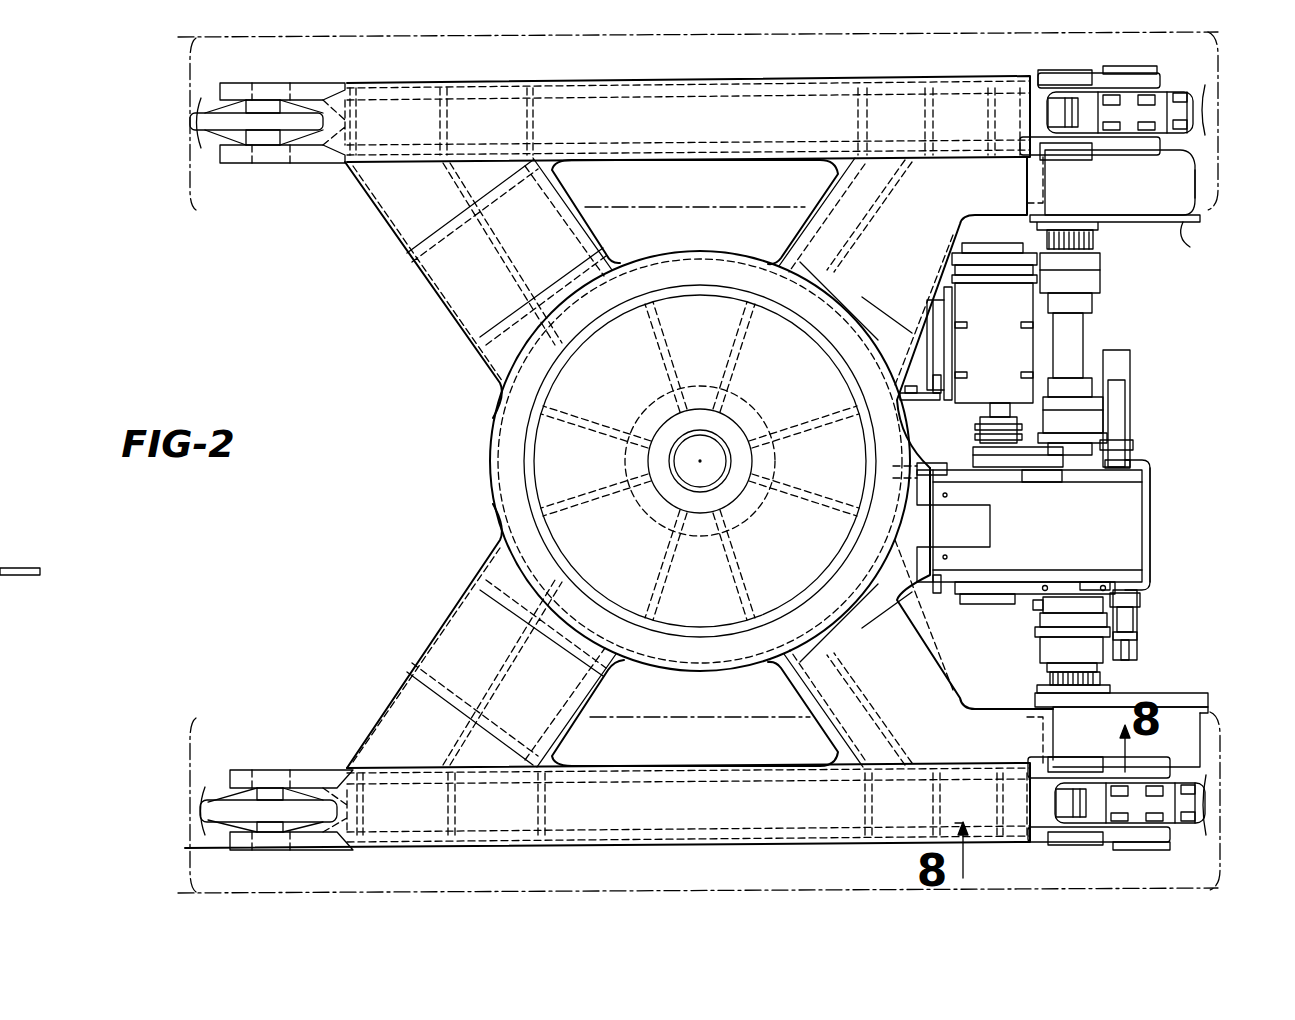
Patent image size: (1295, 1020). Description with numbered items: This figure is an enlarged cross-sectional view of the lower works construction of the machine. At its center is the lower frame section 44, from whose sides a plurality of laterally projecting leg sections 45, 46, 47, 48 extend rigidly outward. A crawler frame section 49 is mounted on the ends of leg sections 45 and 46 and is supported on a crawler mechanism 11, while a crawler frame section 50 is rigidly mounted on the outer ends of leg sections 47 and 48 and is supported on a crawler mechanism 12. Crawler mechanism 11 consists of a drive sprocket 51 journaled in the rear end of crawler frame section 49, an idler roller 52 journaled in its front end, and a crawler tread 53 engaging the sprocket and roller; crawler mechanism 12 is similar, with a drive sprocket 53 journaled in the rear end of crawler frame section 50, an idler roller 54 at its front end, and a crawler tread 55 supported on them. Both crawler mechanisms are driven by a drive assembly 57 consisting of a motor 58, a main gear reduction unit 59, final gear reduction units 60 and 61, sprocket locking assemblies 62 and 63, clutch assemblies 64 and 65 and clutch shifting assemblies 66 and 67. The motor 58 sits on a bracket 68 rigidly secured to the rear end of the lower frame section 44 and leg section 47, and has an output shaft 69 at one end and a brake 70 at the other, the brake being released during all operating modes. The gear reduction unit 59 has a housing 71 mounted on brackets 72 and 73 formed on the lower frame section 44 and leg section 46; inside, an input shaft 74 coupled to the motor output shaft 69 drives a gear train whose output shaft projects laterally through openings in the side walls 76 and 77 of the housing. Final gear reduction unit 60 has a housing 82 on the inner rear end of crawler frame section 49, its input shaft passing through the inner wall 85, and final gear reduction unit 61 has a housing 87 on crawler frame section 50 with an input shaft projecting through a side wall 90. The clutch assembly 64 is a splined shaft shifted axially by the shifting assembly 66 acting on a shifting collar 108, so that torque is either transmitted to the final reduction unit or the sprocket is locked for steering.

The crawler mechanism 11 is at (189, 820).
The crawler mechanism 12 is at (187, 131).
The lower frame section 44 is at (491, 444).
The leg section 45 is at (447, 638).
The leg section 46 is at (812, 701).
The leg section 47 is at (806, 228).
The leg section 48 is at (447, 313).
The crawler frame section 49 is at (629, 814).
The crawler frame section 50 is at (667, 132).
The drive sprocket 51 is at (1195, 805).
The idler roller 52 is at (280, 815).
The drive sprocket / crawler tread 53 is at (1190, 112).
The idler roller 54 is at (268, 117).
The crawler tread 55 is at (733, 34).
The drive assembly 57 is at (1168, 567).
The motor 58 is at (977, 358).
The main gear reduction unit 59 is at (1039, 534).
The final gear reduction unit 60 is at (1069, 732).
The final gear reduction unit 61 is at (1111, 194).
The sprocket locking assembly 62 is at (1060, 803).
The sprocket locking assembly 63 is at (1050, 117).
The clutch assembly 64 is at (1046, 648).
The clutch assembly 65 is at (1088, 330).
The clutch shifting assembly 66 is at (1140, 631).
The clutch shifting assembly 67 is at (1134, 430).
The bracket 68 is at (925, 325).
The output shaft 69 is at (988, 412).
The brake 70 is at (1016, 246).
The housing 71 is at (1136, 531).
The bracket 72 is at (897, 618).
The bracket 73 is at (920, 470).
The input shaft 74 is at (985, 433).
The side wall 76 is at (1092, 582).
The side wall 77 is at (1033, 477).
The housing 82 is at (1200, 735).
The inner wall 85 is at (1176, 696).
The housing 87 is at (1187, 193).
The side wall 90 is at (1190, 247).
The shifting collar 108 is at (1048, 617).